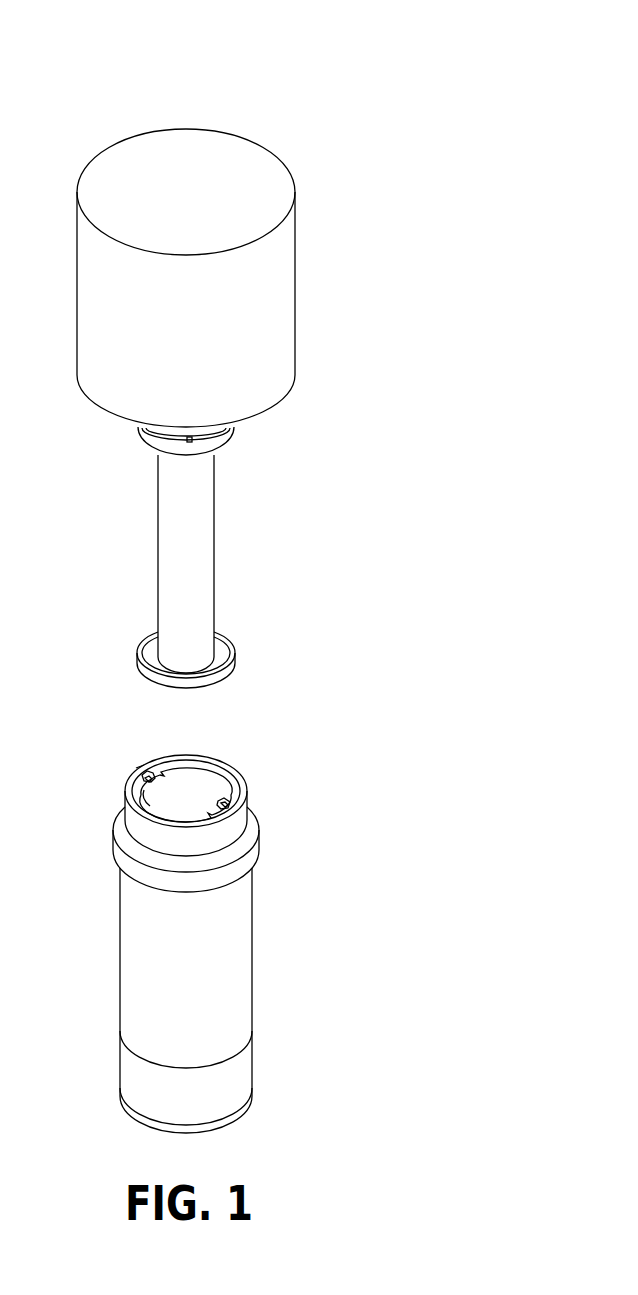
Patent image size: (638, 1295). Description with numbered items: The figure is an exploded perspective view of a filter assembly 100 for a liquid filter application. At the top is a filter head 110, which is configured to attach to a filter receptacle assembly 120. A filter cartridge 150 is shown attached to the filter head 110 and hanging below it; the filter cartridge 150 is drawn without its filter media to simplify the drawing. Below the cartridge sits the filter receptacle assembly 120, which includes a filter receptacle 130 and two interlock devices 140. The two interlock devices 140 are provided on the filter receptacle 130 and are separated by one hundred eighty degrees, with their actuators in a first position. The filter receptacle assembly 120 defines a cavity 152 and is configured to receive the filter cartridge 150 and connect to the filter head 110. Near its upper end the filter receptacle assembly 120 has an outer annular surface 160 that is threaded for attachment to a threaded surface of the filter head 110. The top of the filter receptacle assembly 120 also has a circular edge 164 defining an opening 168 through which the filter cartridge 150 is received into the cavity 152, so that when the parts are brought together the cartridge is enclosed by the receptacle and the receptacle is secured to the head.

The filter assembly 100 is at (305, 64).
The filter head 110 is at (275, 337).
The filter receptacle assembly 120 is at (230, 973).
The filter receptacle 130 is at (238, 1027).
The interlock devices 140 is at (145, 773).
The filter cartridge 150 is at (188, 575).
The cavity 152 is at (193, 793).
The outer annular surface 160 is at (243, 837).
The circular edge 164 is at (142, 811).
The opening 168 is at (160, 797).